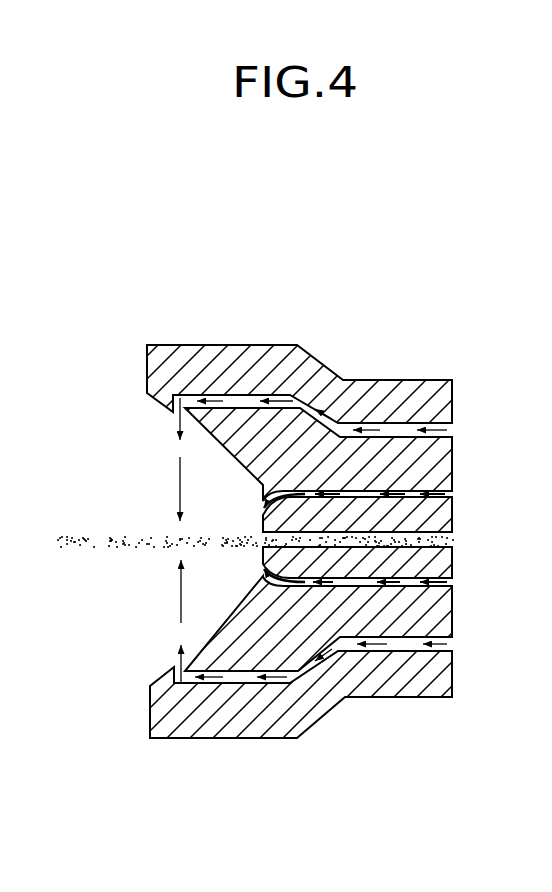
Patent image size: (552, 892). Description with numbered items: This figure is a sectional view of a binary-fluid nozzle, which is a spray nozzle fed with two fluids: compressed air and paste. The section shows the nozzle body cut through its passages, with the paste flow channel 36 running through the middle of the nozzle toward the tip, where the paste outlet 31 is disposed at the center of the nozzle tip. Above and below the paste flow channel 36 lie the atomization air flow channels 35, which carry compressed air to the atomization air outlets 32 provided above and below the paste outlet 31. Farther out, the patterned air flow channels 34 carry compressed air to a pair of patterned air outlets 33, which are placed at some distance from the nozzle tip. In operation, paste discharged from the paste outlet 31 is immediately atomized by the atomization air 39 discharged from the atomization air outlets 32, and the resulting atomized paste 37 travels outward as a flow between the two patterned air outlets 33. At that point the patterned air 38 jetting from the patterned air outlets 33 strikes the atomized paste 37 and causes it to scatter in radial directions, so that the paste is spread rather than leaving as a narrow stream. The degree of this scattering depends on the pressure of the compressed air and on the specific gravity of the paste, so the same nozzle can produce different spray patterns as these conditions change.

The paste outlet 31 is at (257, 552).
The atomization air outlets 32 is at (258, 502).
The patterned air outlets 33 is at (172, 414).
The patterned air flow channels 34 is at (305, 393).
The atomization air flow channels 35 is at (407, 490).
The paste flow channel 36 is at (451, 497).
The atomized paste 37 is at (79, 538).
The patterned air 38 is at (177, 483).
The atomization air 39 is at (258, 511).